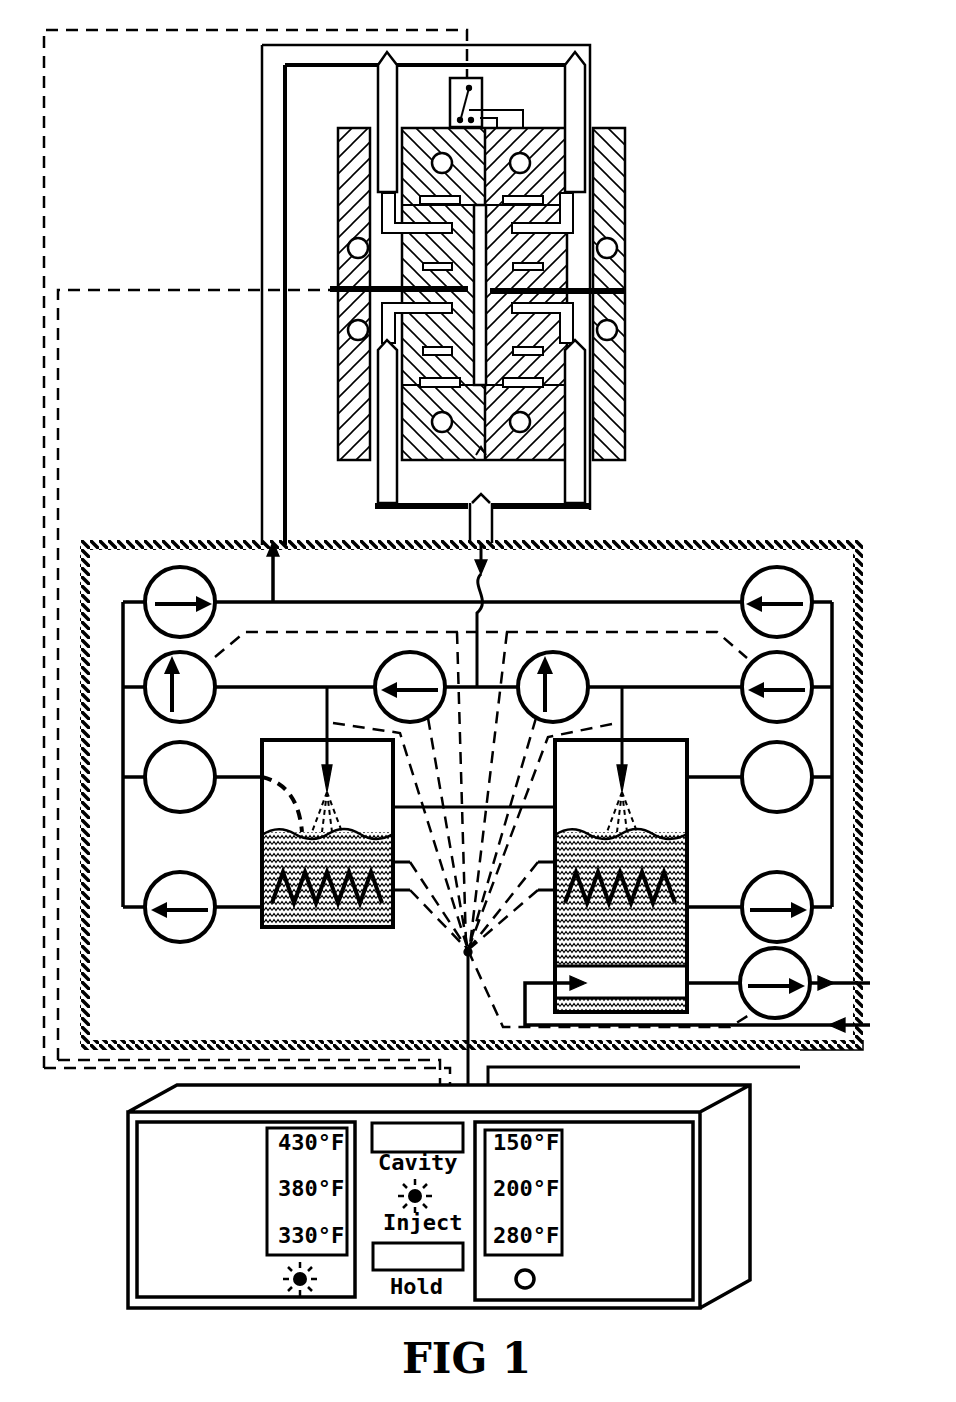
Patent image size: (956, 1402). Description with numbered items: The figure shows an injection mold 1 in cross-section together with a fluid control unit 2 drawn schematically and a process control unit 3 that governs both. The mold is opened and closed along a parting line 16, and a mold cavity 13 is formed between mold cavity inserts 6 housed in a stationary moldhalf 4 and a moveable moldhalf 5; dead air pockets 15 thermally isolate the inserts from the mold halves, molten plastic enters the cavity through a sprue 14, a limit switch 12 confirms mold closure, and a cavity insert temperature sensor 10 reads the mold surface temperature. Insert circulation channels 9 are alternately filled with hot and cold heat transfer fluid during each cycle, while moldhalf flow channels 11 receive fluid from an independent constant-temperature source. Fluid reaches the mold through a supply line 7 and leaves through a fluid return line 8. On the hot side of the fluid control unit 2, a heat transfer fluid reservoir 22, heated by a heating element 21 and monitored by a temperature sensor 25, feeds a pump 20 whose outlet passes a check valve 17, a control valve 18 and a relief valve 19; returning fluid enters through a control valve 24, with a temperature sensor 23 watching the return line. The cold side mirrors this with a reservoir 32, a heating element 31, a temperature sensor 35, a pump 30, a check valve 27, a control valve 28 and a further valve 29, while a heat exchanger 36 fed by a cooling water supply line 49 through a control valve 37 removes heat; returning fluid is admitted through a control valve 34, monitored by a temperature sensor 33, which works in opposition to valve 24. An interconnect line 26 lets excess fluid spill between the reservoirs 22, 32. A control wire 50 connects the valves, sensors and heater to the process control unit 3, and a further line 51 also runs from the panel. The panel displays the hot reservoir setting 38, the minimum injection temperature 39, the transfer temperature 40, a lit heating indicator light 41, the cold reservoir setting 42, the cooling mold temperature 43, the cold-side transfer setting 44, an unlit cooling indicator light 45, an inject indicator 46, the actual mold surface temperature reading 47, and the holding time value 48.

The injection mold 1 is at (730, 91).
The fluid control unit 2 is at (819, 516).
The process control unit 3 is at (789, 1292).
The stationary moldhalf 4 is at (615, 165).
The moveable moldhalf 5 is at (348, 178).
The mold cavity inserts 6 is at (442, 368).
The supply line 7 is at (268, 520).
The fluid return line 8 is at (576, 468).
The insert heat transfer fluid circulation channels 9 is at (545, 266).
The cavity insert temperature sensor 10 is at (362, 256).
The moldhalf flow channels 11 is at (348, 332).
The limit switch 12 is at (475, 102).
The mold cavity 13 is at (487, 250).
The sprue 14 is at (612, 297).
The dead air pockets 15 is at (440, 195).
The parting line 16 is at (482, 452).
The check valve 17 is at (200, 588).
The control valve 18 is at (200, 700).
The relief valve 19 is at (200, 770).
The pump 20 is at (196, 896).
The heating element 21 is at (292, 930).
The heat transfer fluid reservoir 22 is at (262, 812).
The temperature sensor 23 is at (332, 725).
The control valve 24 is at (385, 672).
The temperature sensor 25 is at (410, 861).
The interconnect line 26 is at (395, 805).
The check valve 27 is at (752, 588).
The control valve 28 is at (757, 702).
The relief valve 29 is at (758, 770).
The pump 30 is at (758, 896).
The heating element 31 is at (562, 905).
The reservoir 32 is at (687, 818).
The temperature sensor 33 is at (612, 725).
The control valve 34 is at (566, 672).
The temperature sensor 35 is at (540, 861).
The heat exchanger 36 is at (575, 975).
The control valve 37 is at (758, 972).
The settable temperature 38 is at (150, 1145).
The settable minimum temperature value 39 is at (200, 1195).
The settable transfer temperature 40 is at (175, 1244).
The indicator light 41 is at (295, 1293).
The reservoir temperature settable value 42 is at (655, 1150).
The cooling mold temperature value 43 is at (630, 1200).
The transfer indicator 44 is at (645, 1250).
The indicator light 45 is at (520, 1288).
The cavity inject indicator lamp 46 is at (398, 1198).
The actual mold surface temperature display 47 is at (400, 1123).
The holding temperature settable time value 48 is at (385, 1268).
The cooling water supply line 49 is at (808, 1055).
The control wire 50 is at (462, 1022).
The control line 51 is at (763, 1070).